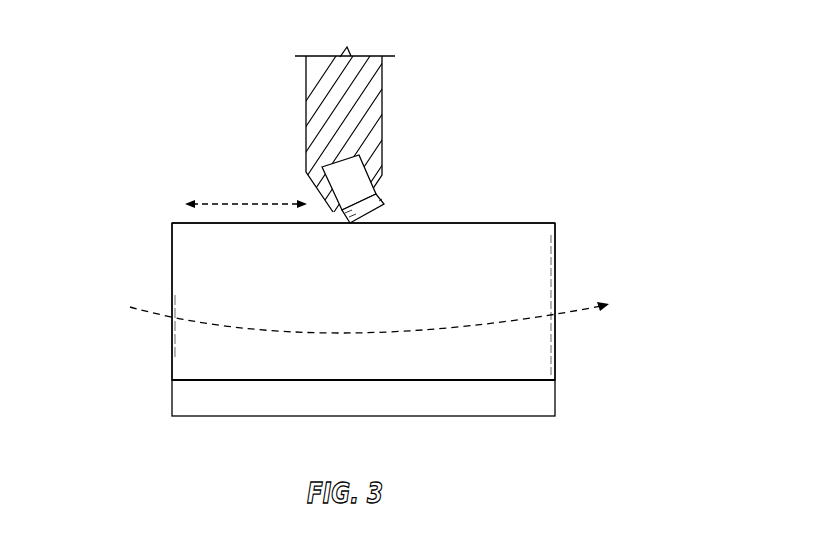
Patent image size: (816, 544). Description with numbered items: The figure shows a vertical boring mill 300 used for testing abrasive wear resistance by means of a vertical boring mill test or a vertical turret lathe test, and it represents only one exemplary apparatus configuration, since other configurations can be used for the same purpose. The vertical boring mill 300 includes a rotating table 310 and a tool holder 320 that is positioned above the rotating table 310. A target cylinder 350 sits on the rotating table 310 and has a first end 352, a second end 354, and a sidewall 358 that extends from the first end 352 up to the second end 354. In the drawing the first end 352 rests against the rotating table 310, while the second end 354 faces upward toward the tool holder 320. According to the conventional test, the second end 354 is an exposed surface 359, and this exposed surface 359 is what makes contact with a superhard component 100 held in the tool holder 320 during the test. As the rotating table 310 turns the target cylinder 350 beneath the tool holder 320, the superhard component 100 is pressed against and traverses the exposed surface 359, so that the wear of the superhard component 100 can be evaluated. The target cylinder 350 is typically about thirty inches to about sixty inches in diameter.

The vertical boring mill 300 is at (601, 56).
The tool holder 320 is at (373, 93).
The superhard component 100 is at (367, 193).
The target cylinder 350 is at (538, 287).
The exposed surface 359 is at (475, 223).
The second end 354 is at (538, 223).
The sidewall 358 is at (172, 265).
The first end 352 is at (187, 380).
The rotating table 310 is at (535, 402).